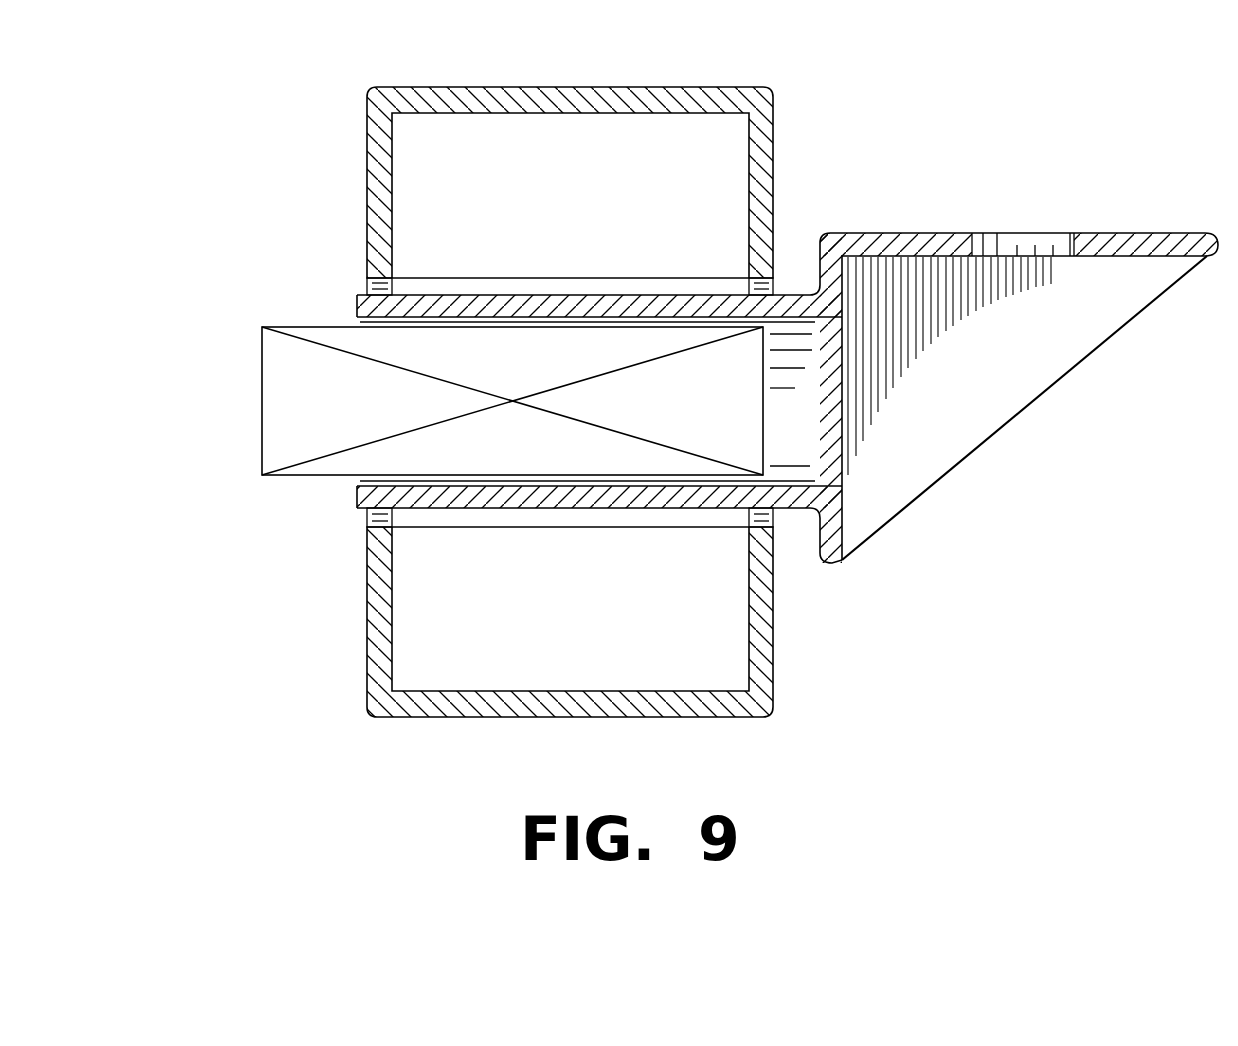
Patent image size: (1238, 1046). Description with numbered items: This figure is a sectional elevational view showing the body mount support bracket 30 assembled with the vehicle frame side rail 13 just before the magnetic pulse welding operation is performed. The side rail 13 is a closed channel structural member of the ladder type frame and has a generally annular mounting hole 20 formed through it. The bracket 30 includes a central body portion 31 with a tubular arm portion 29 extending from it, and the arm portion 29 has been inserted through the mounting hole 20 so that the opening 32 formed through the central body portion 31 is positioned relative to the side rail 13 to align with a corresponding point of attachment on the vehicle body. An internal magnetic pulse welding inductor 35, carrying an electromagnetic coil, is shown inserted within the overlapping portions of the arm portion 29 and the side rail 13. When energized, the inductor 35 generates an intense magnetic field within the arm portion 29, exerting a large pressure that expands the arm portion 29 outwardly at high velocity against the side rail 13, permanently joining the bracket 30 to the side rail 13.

The side rail 13 is at (372, 647).
The mounting hole 20 is at (367, 288).
The arm portion 29 is at (363, 307).
The body mount support bracket 30 is at (968, 500).
The central body portion 31 is at (1138, 235).
The opening 32 is at (1035, 247).
The magnetic pulse welding inductor 35 is at (248, 438).